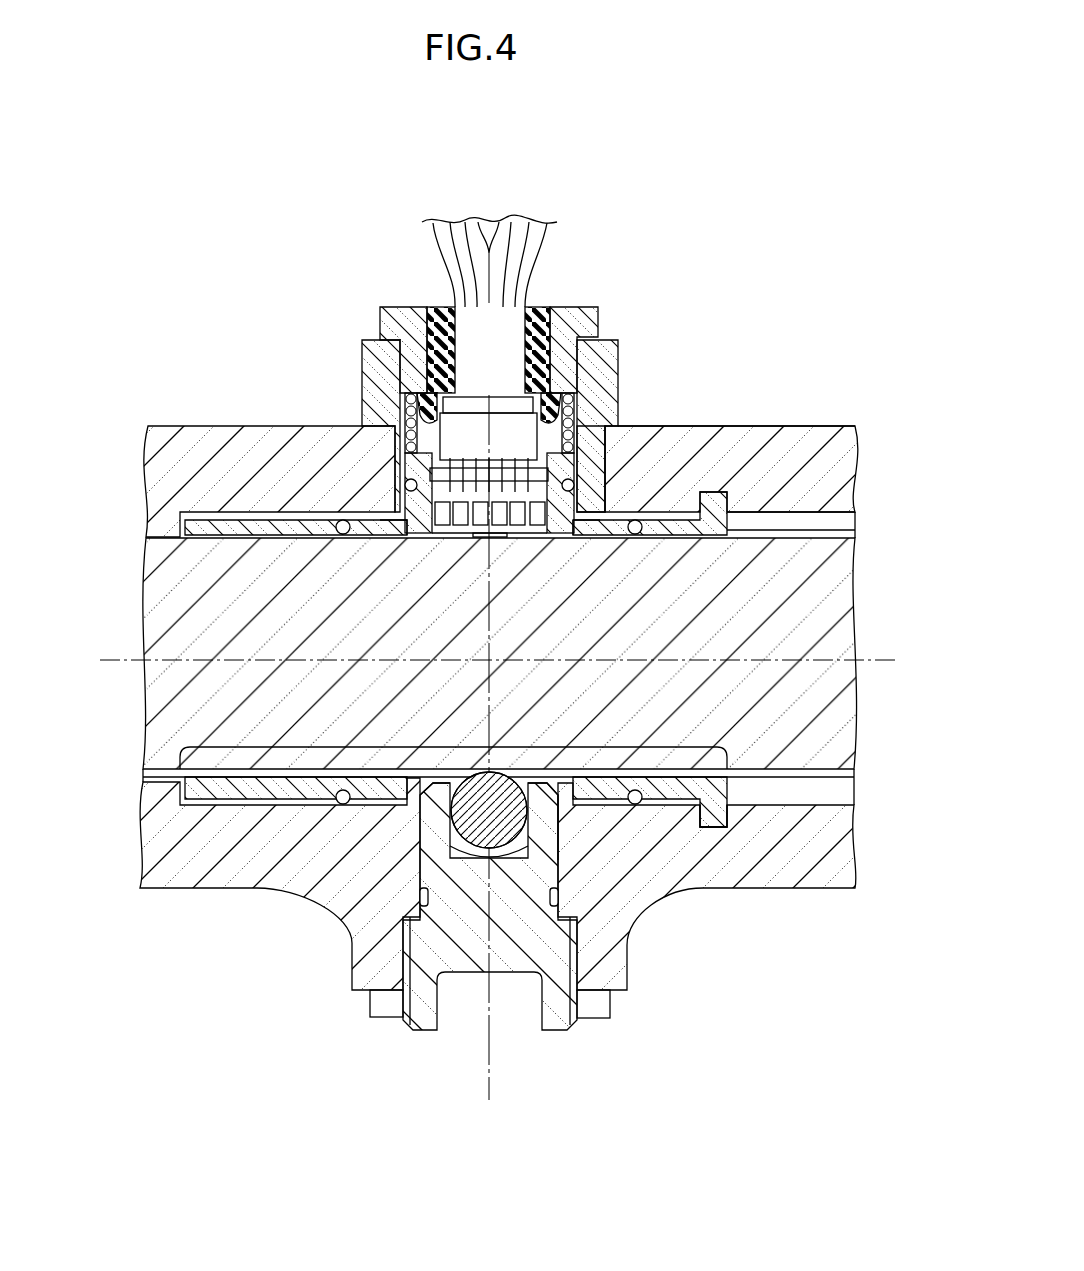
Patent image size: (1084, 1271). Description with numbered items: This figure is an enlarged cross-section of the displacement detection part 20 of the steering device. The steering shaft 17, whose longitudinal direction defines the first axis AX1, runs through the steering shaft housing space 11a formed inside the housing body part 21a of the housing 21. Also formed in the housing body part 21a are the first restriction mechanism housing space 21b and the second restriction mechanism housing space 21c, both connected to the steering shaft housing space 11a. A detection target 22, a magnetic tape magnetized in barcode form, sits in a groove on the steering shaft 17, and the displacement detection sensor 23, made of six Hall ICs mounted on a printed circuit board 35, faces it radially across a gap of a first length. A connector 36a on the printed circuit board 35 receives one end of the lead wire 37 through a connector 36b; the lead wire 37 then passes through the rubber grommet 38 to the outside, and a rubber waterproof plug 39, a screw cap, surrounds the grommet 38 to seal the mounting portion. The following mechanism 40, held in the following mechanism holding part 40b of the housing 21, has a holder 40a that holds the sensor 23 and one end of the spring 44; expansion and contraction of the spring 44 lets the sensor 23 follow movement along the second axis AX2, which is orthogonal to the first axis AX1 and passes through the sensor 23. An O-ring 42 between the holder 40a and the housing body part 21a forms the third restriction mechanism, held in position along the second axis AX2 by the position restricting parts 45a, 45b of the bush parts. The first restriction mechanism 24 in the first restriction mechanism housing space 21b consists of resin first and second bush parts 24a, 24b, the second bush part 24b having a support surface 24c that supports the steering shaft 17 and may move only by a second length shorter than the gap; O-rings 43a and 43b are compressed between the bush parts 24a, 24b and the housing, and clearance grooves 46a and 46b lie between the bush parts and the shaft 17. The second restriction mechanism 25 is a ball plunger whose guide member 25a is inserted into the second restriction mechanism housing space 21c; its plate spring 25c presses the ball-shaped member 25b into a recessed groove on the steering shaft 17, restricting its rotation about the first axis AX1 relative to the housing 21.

The displacement detection part 20 is at (733, 182).
The lead wire 37 is at (447, 247).
The grommet 38 is at (442, 305).
The waterproof plug 39 is at (574, 322).
The connector 36b is at (400, 397).
The connector 36a is at (452, 440).
The spring 44 is at (590, 392).
The housing 21 is at (826, 424).
The following mechanism 40 is at (607, 462).
The housing body part 21a is at (175, 462).
The printed circuit board 35 is at (413, 452).
The O-ring 42 is at (405, 488).
The steering shaft housing space 11a is at (840, 520).
The steering shaft 17 is at (175, 630).
The clearance groove 46a is at (250, 535).
The O-ring 43a is at (338, 533).
The third-restriction-mechanism second-axial-direction position restricting part 45a is at (398, 535).
The detection target 22 is at (470, 538).
The displacement detection sensor 23 is at (520, 528).
The third-restriction-mechanism second-axial-direction position restricting part 45b is at (580, 535).
The clearance groove 46b is at (700, 535).
The following mechanism holding part 40b is at (420, 535).
The holder 40a is at (560, 535).
The O-ring 43b is at (636, 535).
The first axis AX1 is at (842, 645).
The first restriction mechanism 24 is at (427, 747).
The first restriction mechanism housing space 21b is at (222, 808).
The first bush part 24a is at (305, 800).
The second restriction mechanism housing space 21c is at (385, 800).
The second bush part 24b is at (673, 795).
The support surface 24c is at (716, 830).
The guide member 25a is at (560, 818).
The ball-shaped member 25b is at (512, 862).
The plate spring 25c is at (510, 818).
The second restriction mechanism 25 is at (449, 1040).
The second axis AX2 is at (500, 1052).